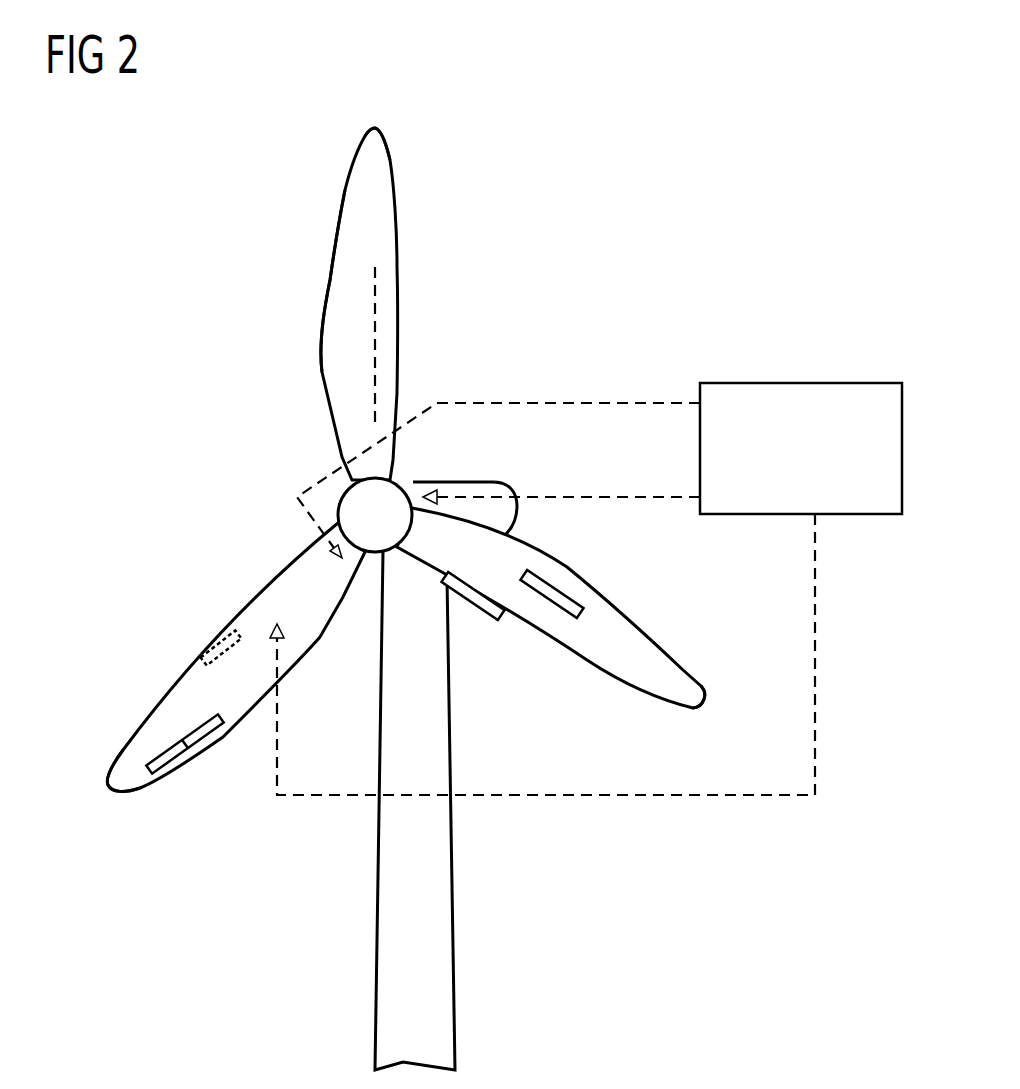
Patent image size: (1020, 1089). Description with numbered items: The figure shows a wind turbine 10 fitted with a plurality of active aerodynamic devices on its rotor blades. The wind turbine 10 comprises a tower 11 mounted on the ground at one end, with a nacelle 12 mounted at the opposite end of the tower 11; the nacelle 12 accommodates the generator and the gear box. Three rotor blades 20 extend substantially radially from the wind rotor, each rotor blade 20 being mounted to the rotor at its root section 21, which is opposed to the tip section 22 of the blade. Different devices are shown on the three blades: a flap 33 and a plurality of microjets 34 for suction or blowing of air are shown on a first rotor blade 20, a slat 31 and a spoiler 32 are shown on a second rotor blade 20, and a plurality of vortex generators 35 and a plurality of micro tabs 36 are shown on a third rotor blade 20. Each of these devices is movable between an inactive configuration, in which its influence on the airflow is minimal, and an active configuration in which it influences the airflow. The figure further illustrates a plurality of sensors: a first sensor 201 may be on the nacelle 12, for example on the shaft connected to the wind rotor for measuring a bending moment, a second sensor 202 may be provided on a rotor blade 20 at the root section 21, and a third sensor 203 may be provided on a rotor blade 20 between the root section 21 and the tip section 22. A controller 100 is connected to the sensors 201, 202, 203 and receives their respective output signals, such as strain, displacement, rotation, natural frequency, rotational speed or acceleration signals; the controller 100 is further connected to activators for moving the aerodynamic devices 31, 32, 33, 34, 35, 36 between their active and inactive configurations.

The wind turbine 10 is at (706, 144).
The tower 11 is at (447, 922).
The nacelle 12 is at (490, 481).
The rotor blade 20 is at (396, 215).
The root section 21 is at (368, 472).
The tip section 22 is at (371, 128).
The slat 31 is at (467, 606).
The spoiler 32 is at (571, 593).
The flap 33 is at (165, 761).
The microjets 34 is at (216, 645).
The vortex generators 35 is at (376, 303).
The micro tabs 36 is at (341, 215).
The controller 100 is at (802, 383).
The first sensor 201 is at (432, 488).
The second sensor 202 is at (334, 565).
The third sensor 203 is at (272, 633).